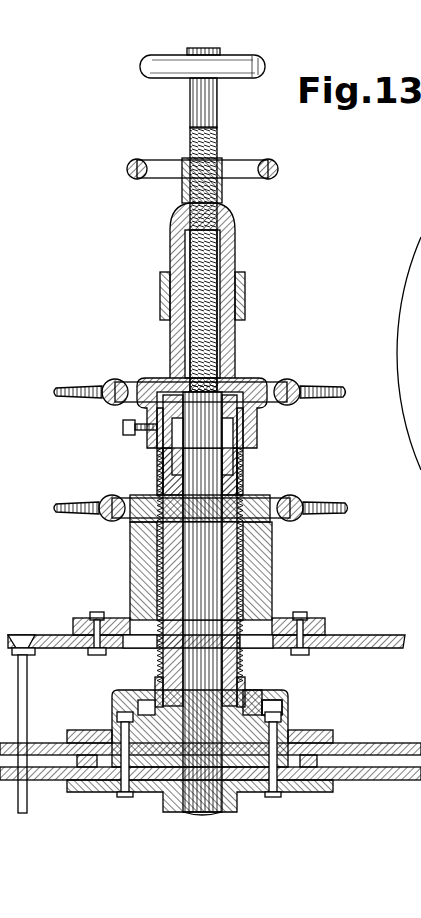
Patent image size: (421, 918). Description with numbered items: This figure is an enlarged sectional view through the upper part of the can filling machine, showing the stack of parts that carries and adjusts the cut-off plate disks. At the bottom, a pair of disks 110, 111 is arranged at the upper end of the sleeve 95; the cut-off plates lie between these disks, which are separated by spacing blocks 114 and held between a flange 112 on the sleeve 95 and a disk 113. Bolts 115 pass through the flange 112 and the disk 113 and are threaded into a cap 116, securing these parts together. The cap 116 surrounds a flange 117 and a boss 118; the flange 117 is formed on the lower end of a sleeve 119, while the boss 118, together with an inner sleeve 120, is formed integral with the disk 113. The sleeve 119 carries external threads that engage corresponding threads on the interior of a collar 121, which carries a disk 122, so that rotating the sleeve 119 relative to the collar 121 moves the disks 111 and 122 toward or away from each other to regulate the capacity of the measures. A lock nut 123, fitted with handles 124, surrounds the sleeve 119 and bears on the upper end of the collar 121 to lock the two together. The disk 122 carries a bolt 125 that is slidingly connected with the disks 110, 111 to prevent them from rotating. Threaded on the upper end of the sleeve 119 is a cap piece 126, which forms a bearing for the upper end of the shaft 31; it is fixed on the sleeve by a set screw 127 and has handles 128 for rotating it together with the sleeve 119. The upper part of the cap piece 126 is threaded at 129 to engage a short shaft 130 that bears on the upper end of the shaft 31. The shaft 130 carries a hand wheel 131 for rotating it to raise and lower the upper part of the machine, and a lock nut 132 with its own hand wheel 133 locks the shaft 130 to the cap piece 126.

The hand wheel 131 is at (186, 70).
The hand wheel 133 is at (160, 150).
The lock nut 132 is at (184, 190).
The threads 129 is at (195, 228).
The short shaft 130 is at (214, 260).
The handles 128 is at (328, 396).
The set screw 127 is at (124, 428).
The cap piece 126 is at (256, 432).
The shaft 31 is at (190, 455).
The lock nut 123 is at (264, 500).
The handles 124 is at (330, 512).
The collar 121 is at (262, 570).
The disk 122 is at (355, 646).
The inner sleeve 120 is at (175, 654).
The sleeve 119 is at (240, 657).
The flange 117 is at (252, 705).
The boss 118 is at (262, 708).
The cap 116 is at (288, 700).
The bolt 125 is at (27, 690).
The spacing blocks 114 is at (82, 756).
The disk 113 is at (306, 735).
The disk 111 is at (386, 752).
The disk 110 is at (386, 781).
The flange 112 is at (320, 791).
The bolts 115 is at (124, 797).
The sleeve 95 is at (181, 800).